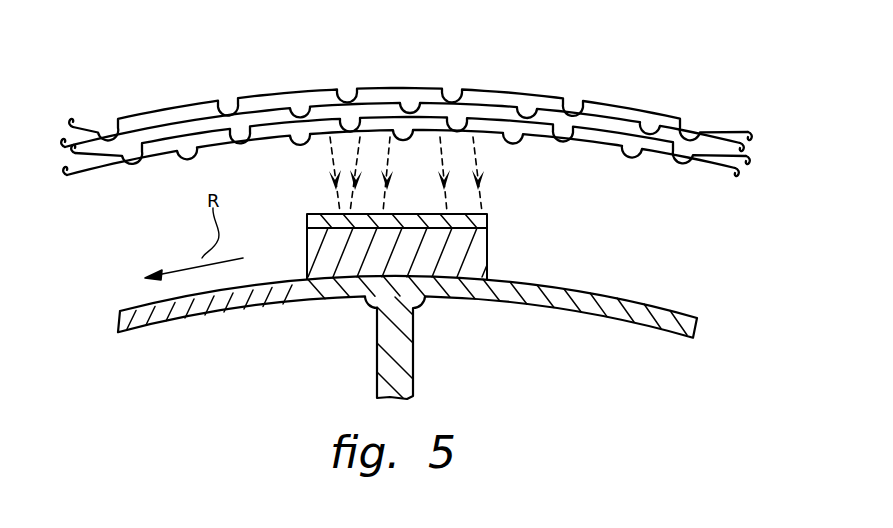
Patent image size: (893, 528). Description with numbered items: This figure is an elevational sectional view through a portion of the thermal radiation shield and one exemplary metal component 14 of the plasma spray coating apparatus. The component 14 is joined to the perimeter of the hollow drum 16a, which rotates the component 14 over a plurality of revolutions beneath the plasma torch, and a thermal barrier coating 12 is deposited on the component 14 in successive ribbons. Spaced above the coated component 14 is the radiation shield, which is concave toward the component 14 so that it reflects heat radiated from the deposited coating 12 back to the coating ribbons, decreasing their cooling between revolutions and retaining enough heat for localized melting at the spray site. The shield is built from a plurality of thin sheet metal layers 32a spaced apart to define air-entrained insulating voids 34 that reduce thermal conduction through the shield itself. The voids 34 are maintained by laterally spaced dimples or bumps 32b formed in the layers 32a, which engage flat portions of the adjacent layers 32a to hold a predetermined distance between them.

The thermal barrier coating 12 is at (491, 218).
The metal component 14 is at (489, 252).
The hollow drum 16a is at (668, 303).
The sheet metal layers 32a is at (406, 95).
The dimples or bumps 32b is at (183, 146).
The insulating voids 34 is at (244, 103).